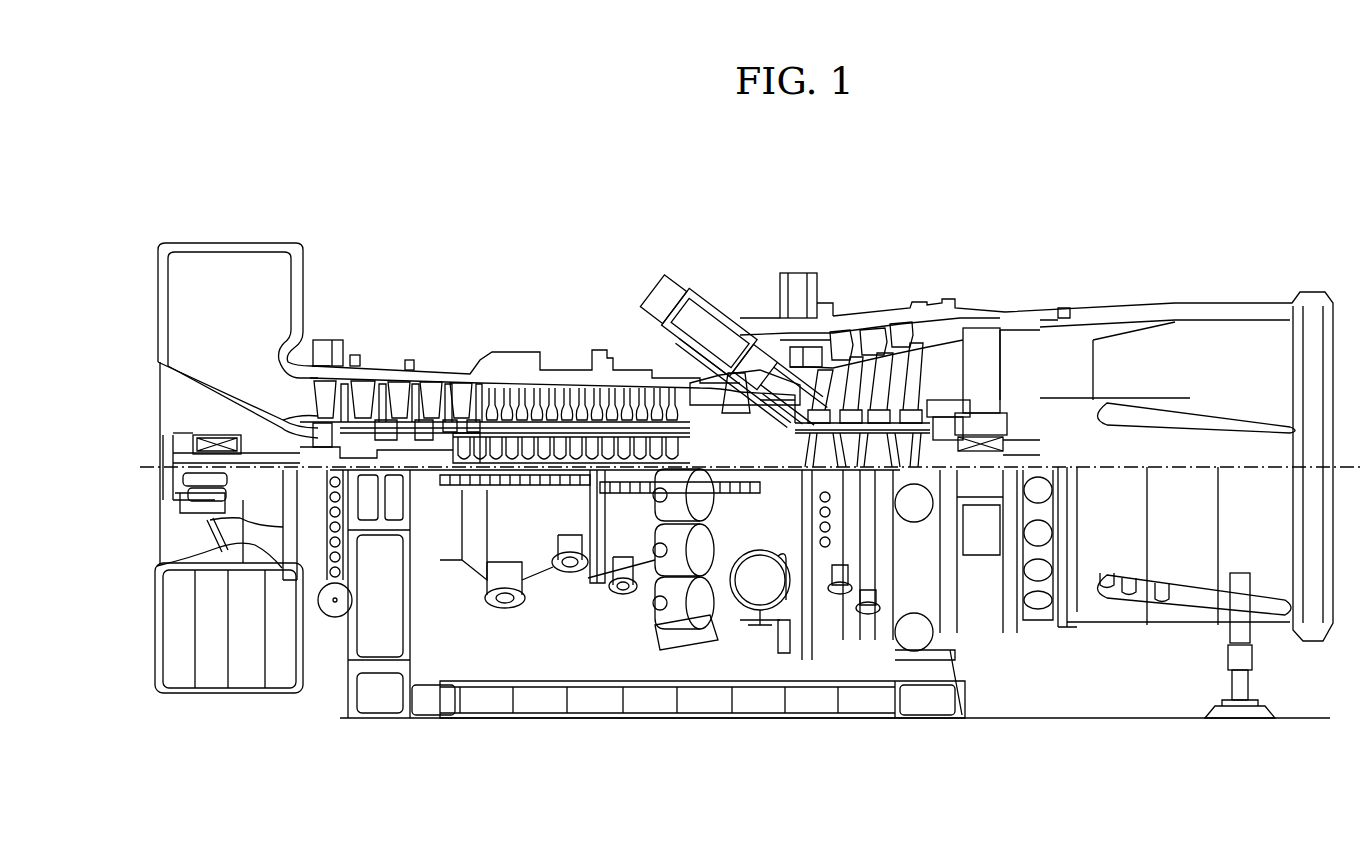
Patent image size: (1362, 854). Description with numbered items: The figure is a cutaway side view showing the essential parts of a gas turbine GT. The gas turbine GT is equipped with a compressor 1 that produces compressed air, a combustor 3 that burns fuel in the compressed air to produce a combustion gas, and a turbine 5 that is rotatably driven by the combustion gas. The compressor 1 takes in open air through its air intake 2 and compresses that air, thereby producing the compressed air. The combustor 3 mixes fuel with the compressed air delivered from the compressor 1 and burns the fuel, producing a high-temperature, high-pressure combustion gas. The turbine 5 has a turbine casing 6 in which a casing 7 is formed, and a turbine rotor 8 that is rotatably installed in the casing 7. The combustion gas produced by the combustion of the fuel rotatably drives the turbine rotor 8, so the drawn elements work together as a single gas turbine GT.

The gas turbine GT is at (1174, 264).
The compressor 1 is at (452, 368).
The air intake 2 is at (156, 301).
The combustor 3 is at (666, 289).
The turbine 5 is at (931, 303).
The turbine casing 6 is at (848, 330).
The casing 7 is at (787, 346).
The turbine rotor 8 is at (1030, 445).